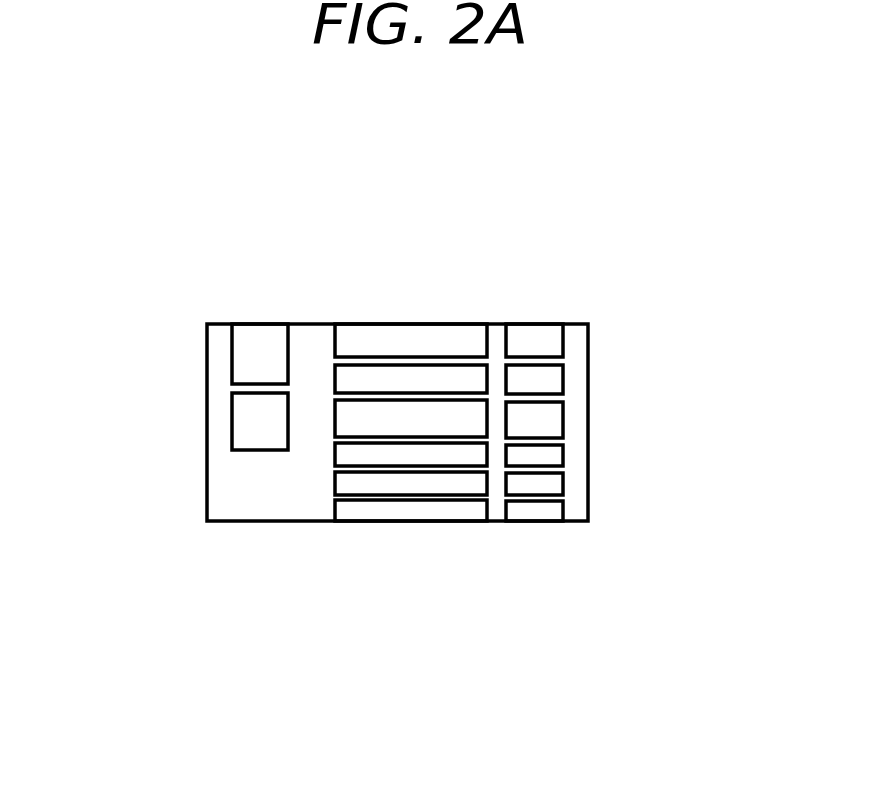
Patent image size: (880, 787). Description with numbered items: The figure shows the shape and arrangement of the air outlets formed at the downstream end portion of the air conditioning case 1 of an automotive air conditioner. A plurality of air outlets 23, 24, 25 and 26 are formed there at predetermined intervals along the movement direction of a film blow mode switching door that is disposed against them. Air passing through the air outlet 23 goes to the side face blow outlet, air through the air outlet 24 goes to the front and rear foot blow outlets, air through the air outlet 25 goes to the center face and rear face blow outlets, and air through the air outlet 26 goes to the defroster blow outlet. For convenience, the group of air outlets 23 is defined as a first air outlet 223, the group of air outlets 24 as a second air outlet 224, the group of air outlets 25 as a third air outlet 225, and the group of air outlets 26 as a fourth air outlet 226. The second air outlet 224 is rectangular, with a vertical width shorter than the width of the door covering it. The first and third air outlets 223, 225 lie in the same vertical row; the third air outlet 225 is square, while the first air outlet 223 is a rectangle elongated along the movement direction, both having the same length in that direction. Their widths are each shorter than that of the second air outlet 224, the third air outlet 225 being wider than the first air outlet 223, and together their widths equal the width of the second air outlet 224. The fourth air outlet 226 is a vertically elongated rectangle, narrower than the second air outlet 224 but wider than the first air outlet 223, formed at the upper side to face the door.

The air conditioning case 1 is at (232, 492).
The air outlet 23 is at (380, 478).
The first air outlet 223 is at (353, 588).
The air outlet 24 is at (553, 343).
The second air outlet 224 is at (708, 537).
The air outlet 25 is at (359, 335).
The third air outlet 225 is at (327, 195).
The air outlet 26 is at (243, 350).
The fourth air outlet 226 is at (117, 325).